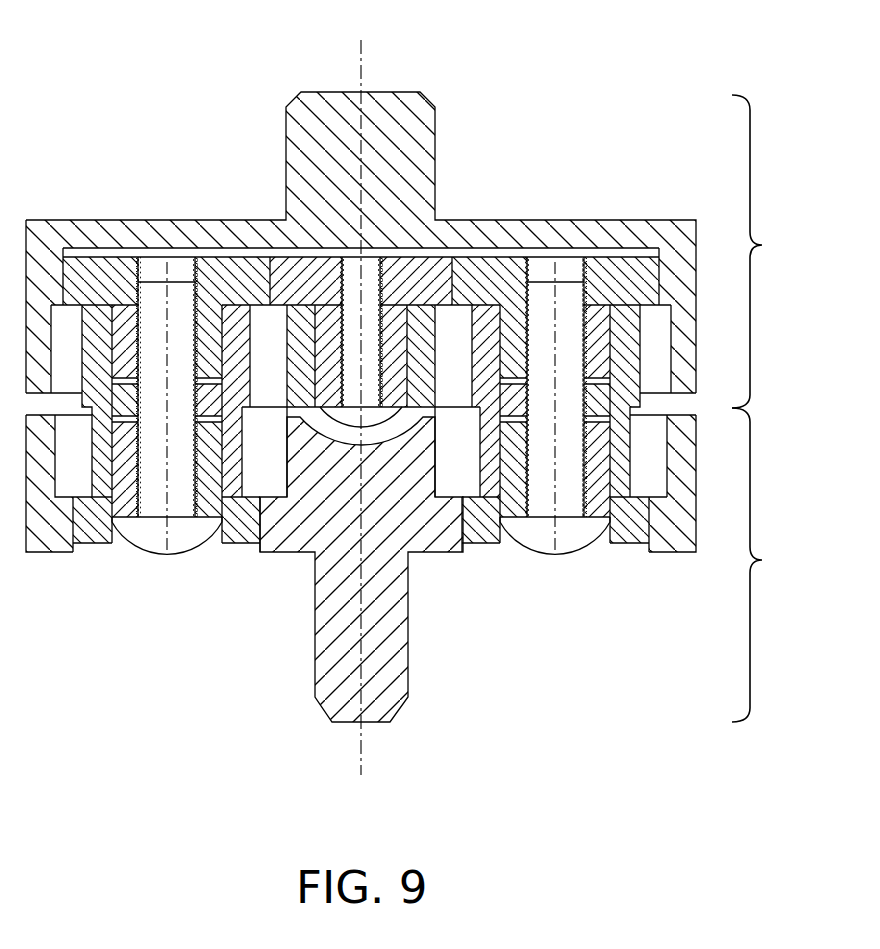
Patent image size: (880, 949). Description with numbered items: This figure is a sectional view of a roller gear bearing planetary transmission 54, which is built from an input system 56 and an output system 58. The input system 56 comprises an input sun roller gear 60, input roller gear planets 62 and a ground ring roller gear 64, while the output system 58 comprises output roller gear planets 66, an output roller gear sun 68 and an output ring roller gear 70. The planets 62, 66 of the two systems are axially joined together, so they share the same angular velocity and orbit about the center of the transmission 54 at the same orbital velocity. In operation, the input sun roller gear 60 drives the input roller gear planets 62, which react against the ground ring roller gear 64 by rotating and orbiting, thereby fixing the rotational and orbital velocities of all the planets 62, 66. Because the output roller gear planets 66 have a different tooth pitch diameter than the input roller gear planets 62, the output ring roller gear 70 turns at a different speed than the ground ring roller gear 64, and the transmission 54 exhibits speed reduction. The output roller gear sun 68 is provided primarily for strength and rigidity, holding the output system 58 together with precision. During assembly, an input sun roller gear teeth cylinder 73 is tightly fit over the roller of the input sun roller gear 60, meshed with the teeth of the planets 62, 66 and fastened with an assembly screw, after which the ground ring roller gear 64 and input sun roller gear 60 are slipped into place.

The transmission 54 is at (208, 95).
The input system 56 is at (773, 565).
The output system 58 is at (773, 251).
The input sun roller gear 60 is at (438, 535).
The input roller gear planets 62 is at (244, 540).
The ground ring roller gear 64 is at (55, 547).
The output roller gear planets 66 is at (100, 273).
The output roller gear sun 68 is at (440, 267).
The output ring roller gear 70 is at (677, 232).
The input sun roller gear teeth cylinder 73 is at (283, 328).